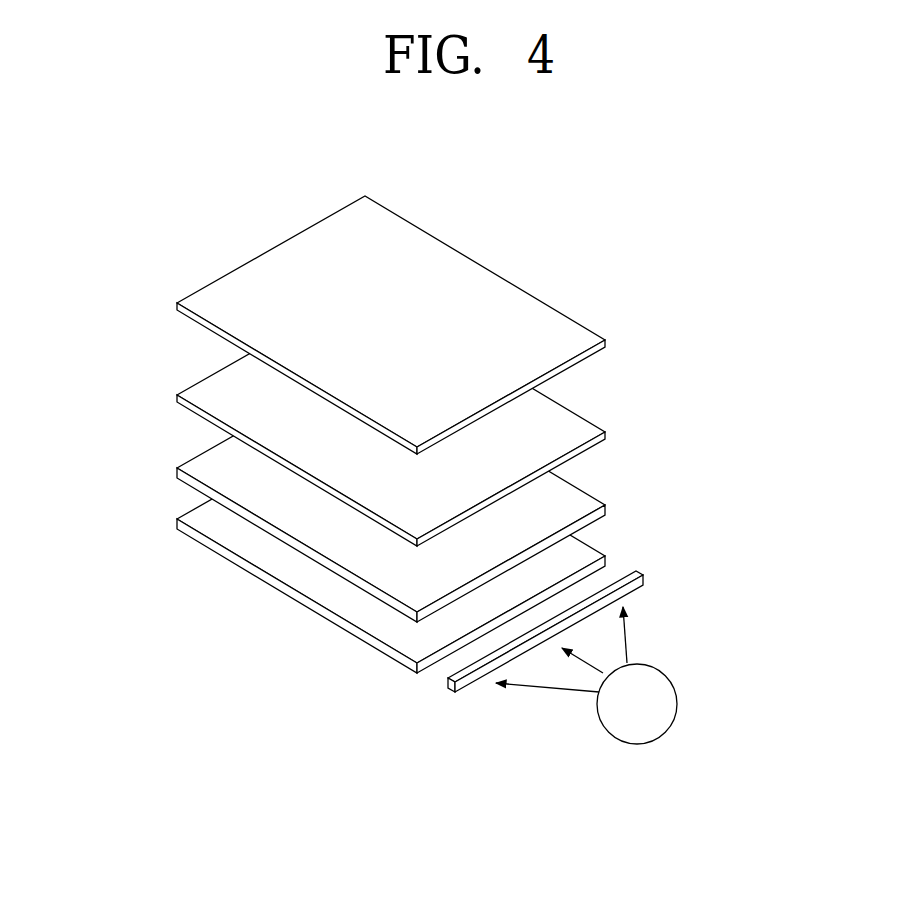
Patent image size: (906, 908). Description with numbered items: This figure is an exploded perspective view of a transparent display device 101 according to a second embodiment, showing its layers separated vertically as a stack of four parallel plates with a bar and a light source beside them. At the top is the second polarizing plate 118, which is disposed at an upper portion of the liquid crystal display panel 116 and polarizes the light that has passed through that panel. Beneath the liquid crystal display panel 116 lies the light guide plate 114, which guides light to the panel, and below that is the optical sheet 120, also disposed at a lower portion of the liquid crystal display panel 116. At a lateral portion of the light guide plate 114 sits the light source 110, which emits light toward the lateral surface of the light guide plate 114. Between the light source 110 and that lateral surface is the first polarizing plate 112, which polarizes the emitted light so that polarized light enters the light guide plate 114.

The transparent display device 101 is at (584, 273).
The light source 110 is at (674, 683).
The first polarizing plate 112 is at (644, 577).
The light guide plate 114 is at (203, 462).
The liquid crystal display panel 116 is at (203, 392).
The second polarizing plate 118 is at (203, 296).
The optical sheet 120 is at (203, 517).